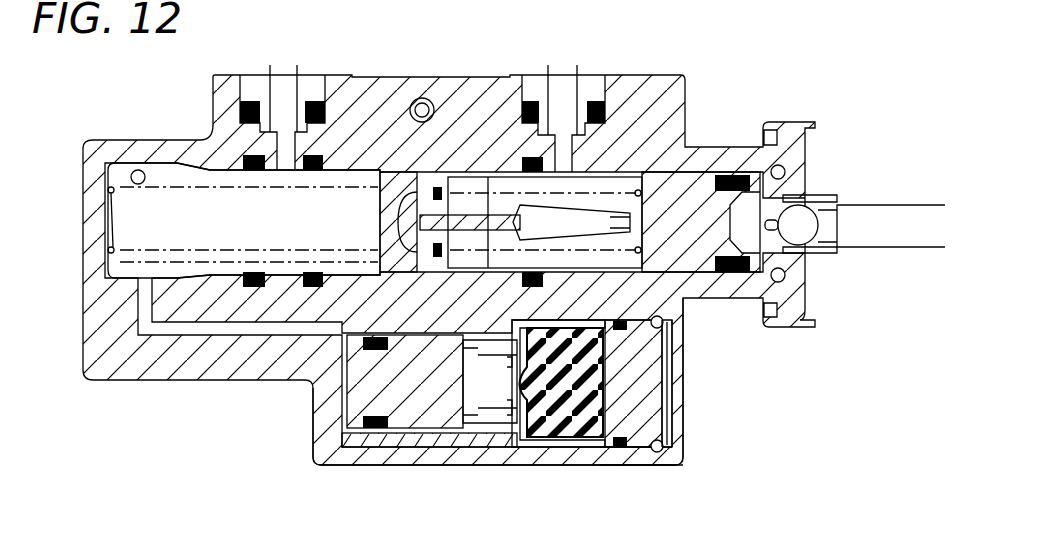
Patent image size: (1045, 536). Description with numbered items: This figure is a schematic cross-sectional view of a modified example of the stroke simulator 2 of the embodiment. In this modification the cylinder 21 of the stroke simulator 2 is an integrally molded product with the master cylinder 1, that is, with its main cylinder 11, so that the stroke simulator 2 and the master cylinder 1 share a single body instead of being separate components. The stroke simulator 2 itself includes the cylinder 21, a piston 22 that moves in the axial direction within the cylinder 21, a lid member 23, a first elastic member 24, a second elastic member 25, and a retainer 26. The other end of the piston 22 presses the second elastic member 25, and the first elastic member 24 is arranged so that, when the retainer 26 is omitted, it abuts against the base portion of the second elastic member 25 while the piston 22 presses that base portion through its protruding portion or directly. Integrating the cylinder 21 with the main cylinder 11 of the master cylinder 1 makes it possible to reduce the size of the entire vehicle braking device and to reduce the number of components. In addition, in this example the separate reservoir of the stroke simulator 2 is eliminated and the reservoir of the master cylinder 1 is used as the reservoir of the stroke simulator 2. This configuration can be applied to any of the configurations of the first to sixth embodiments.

The master cylinder 1 is at (90, 140).
The main cylinder 11 is at (158, 140).
The stroke simulator 2 is at (325, 432).
The cylinder 21 is at (675, 459).
The piston 22 is at (370, 396).
The lid member 23 is at (655, 407).
The first elastic member 24 is at (664, 366).
The second elastic member 25 is at (512, 415).
The retainer 26 is at (533, 440).